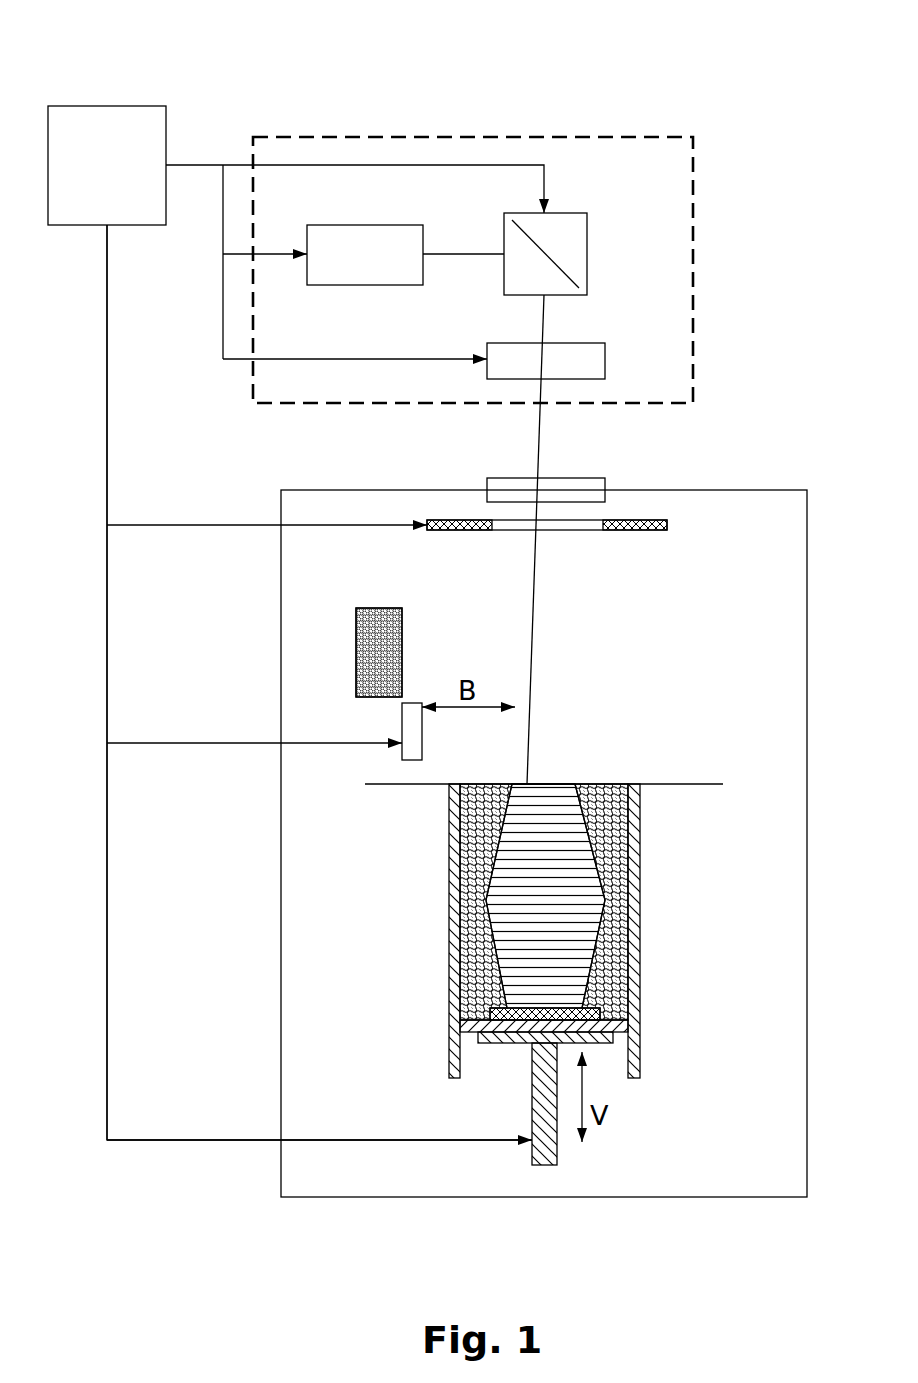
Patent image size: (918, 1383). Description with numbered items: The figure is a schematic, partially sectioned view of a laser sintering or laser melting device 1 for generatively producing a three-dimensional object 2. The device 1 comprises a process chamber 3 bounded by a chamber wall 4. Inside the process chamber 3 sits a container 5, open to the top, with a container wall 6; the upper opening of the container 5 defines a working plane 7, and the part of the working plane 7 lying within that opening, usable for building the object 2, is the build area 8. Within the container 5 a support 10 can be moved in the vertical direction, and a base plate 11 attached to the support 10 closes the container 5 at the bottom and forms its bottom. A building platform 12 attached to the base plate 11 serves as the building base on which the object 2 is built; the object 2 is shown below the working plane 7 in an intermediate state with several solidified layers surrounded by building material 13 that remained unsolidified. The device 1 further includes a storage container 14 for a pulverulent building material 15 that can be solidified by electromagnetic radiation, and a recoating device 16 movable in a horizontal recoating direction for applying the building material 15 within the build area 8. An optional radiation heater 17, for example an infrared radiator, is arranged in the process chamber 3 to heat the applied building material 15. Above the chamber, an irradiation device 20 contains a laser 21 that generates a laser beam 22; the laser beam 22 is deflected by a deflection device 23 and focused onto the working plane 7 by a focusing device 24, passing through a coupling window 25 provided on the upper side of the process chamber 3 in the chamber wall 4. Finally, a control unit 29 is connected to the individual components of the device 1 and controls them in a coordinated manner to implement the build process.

The laser sintering or laser melting device 1 is at (750, 118).
The object 2 is at (565, 836).
The process chamber 3 is at (732, 592).
The chamber wall 4 is at (281, 983).
The container 5 is at (547, 946).
The container wall 6 is at (632, 893).
The working plane 7 is at (668, 784).
The build area 8 is at (607, 784).
The support 10 is at (508, 1043).
The base plate 11 is at (470, 1030).
The building platform 12 is at (480, 1005).
The building material 13 is at (460, 825).
The storage container 14 is at (378, 608).
The pulverulent building material 15 is at (390, 637).
The recoating device 16 is at (405, 725).
The radiation heater 17 is at (458, 520).
The irradiation device 20 is at (693, 275).
The laser 21 is at (368, 272).
The laser beam 22 is at (453, 253).
The deflection device 23 is at (573, 228).
The focusing device 24 is at (590, 360).
The coupling window 25 is at (577, 487).
The control unit 29 is at (107, 165).